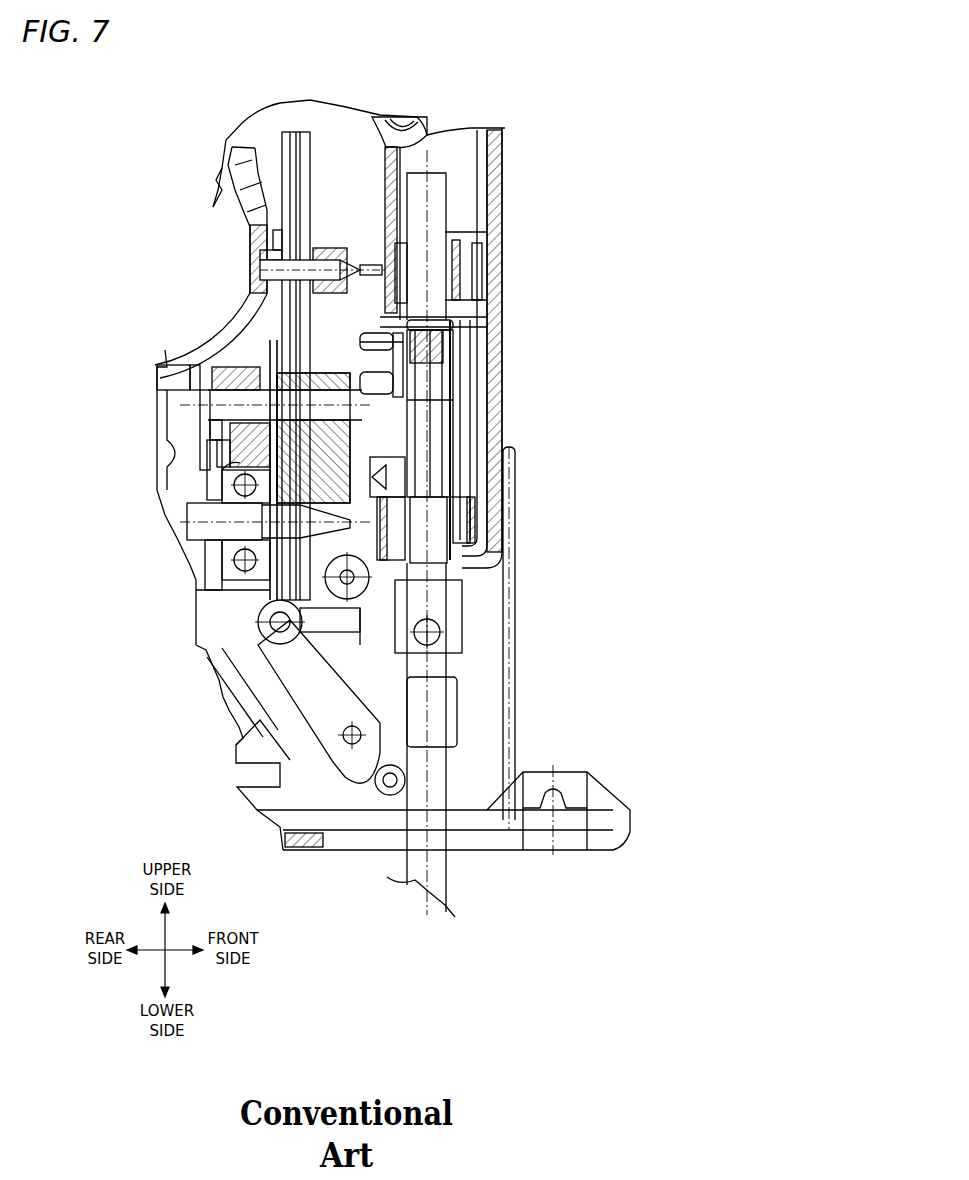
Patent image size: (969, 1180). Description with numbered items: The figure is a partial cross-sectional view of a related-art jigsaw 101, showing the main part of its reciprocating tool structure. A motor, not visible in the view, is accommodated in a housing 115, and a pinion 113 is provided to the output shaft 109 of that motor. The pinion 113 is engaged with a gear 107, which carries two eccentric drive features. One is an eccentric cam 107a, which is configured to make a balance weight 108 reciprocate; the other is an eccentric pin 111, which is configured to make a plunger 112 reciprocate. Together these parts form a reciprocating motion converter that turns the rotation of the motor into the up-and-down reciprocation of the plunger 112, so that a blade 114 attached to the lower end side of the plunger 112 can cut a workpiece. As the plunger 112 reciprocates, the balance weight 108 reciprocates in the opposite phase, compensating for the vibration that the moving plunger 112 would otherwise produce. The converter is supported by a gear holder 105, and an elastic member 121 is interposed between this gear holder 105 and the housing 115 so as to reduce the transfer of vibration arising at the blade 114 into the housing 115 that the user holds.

The jigsaw 101 is at (546, 106).
The gear holder 105 is at (200, 443).
The gear 107 is at (505, 490).
The eccentric cam 107a is at (240, 462).
The balance weight 108 is at (307, 132).
The output shaft 109 is at (200, 530).
The eccentric pin 111 is at (432, 372).
The plunger 112 is at (440, 218).
The pinion 113 is at (432, 572).
The blade 114 is at (465, 888).
The housing 115 is at (268, 262).
The elastic member 121 is at (206, 338).